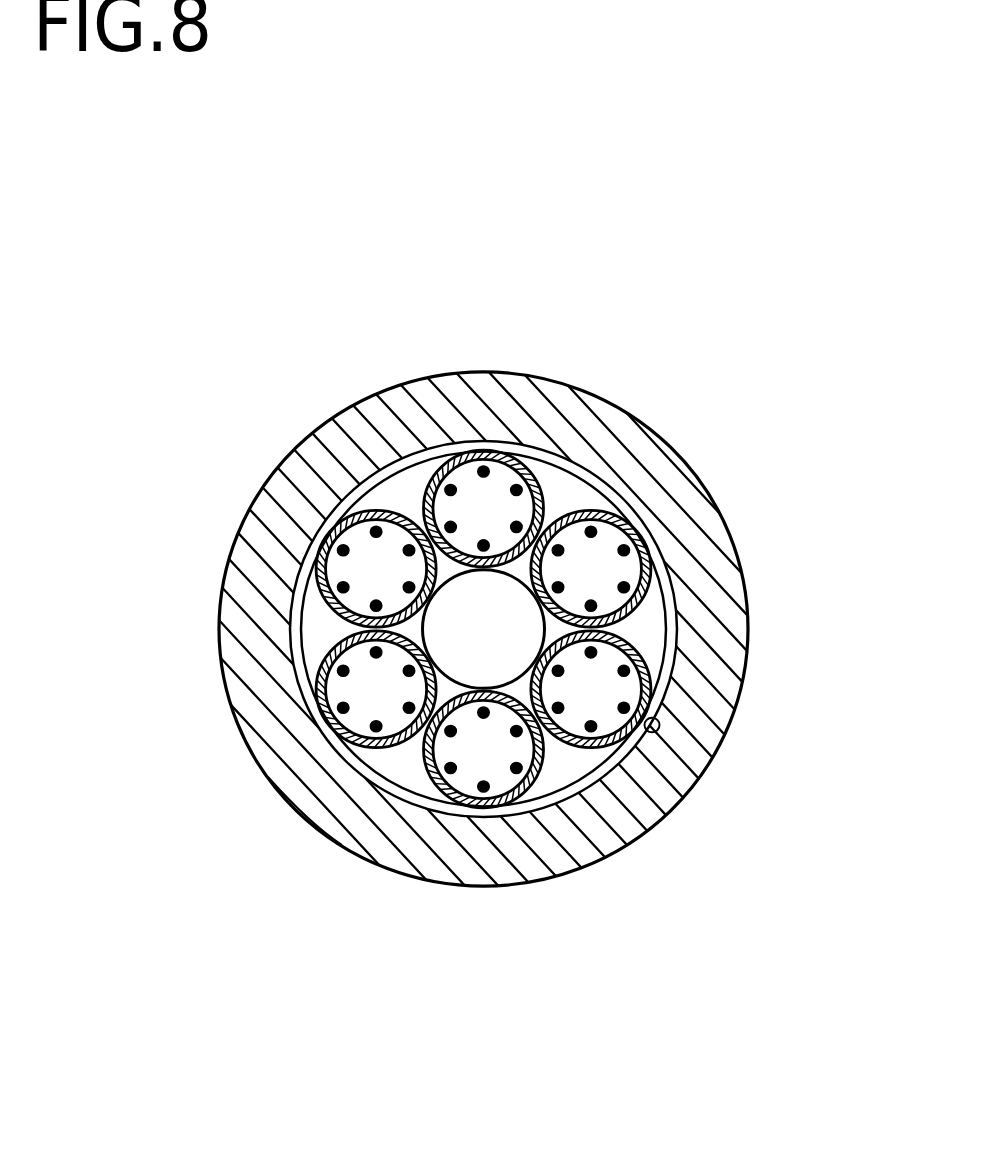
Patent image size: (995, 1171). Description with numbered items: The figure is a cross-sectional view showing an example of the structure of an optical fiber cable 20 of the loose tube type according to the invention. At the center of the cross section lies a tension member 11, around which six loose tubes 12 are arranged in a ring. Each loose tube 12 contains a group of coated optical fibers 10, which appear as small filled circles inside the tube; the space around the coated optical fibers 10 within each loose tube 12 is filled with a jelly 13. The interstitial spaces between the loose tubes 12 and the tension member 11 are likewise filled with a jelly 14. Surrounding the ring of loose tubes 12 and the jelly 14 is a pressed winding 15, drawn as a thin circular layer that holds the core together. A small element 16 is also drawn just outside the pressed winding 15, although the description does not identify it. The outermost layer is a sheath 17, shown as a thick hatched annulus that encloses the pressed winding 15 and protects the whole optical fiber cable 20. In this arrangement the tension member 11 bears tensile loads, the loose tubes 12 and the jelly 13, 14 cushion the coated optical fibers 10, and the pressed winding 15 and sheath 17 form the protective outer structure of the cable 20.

The optical fiber cable 20 is at (497, 620).
The coated optical fiber 10 is at (580, 440).
The tension member 11 is at (498, 630).
The loose tube 12 is at (547, 493).
The jelly 13 is at (600, 572).
The jelly 14 is at (400, 770).
The pressed winding 15 is at (592, 778).
The rip cord 16 is at (660, 730).
The sheath 17 is at (533, 863).